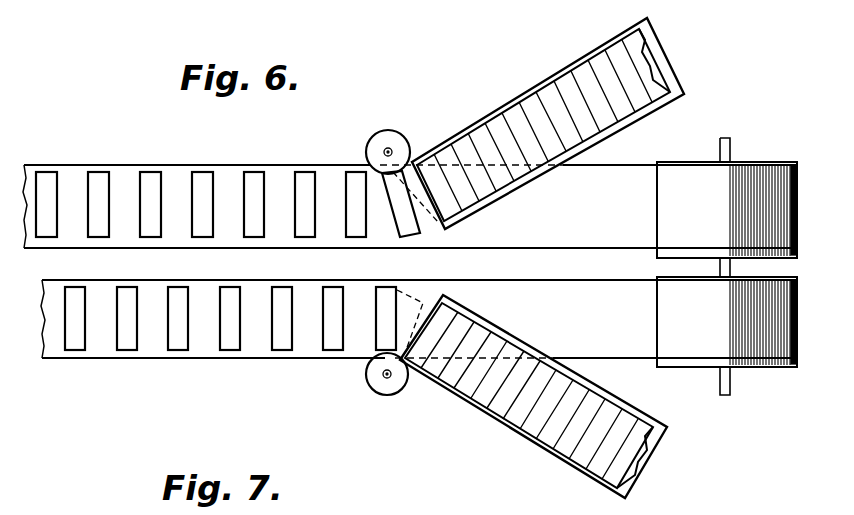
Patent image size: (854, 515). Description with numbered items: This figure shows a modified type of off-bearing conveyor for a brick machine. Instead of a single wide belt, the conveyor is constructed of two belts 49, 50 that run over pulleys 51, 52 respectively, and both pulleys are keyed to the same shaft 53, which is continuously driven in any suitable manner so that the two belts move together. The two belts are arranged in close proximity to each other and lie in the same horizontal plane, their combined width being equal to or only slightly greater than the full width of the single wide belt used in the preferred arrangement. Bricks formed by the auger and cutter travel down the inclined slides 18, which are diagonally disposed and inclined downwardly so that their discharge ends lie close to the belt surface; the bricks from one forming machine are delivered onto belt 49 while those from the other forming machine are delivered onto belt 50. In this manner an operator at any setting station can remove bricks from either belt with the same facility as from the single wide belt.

In FIG. 6, the inclined slide 18 is at (515, 95).
In FIG. 7, the inclined slide 18 is at (481, 418).
In FIG. 6, the belt 49 is at (291, 165).
In FIG. 7, the belt 50 is at (277, 360).
In FIG. 6, the pulley 51 is at (679, 163).
In FIG. 7, the pulley 52 is at (697, 369).
In FIG. 6, the shaft 53 is at (727, 141).